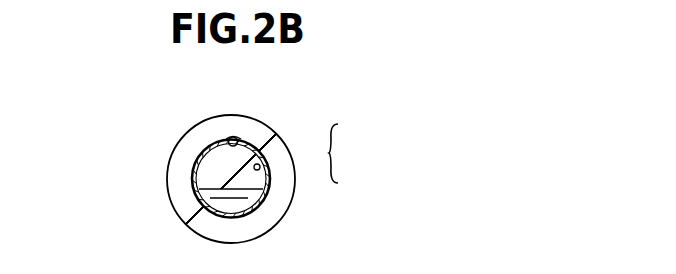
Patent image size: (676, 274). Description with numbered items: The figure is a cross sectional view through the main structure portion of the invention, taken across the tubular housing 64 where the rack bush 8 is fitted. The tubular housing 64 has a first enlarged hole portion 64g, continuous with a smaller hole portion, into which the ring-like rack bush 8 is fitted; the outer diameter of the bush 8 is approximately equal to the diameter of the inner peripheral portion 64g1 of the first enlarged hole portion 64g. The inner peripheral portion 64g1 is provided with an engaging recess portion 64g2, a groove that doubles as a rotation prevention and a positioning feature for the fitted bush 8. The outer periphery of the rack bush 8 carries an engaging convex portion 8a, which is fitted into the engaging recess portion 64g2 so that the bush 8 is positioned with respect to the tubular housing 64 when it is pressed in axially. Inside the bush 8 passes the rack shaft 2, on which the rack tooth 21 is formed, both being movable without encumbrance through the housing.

The rack shaft 2 is at (202, 182).
The rack bush 8 is at (197, 157).
The engaging convex portion 8a is at (228, 139).
The rack tooth 21 is at (207, 216).
The tubular housing 64 is at (277, 192).
The first enlarged hole portion 64g is at (263, 165).
The inner peripheral portion 64g1 is at (326, 168).
The engaging recess portion 64g2 is at (241, 141).